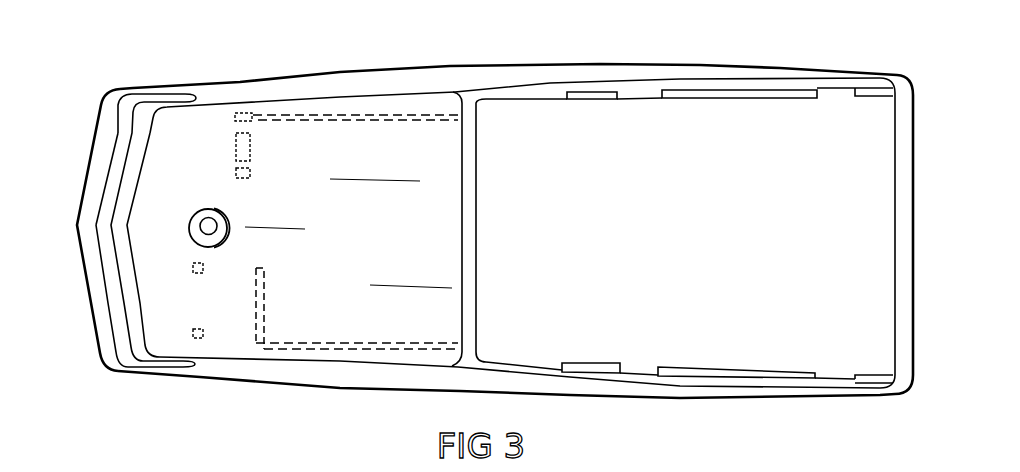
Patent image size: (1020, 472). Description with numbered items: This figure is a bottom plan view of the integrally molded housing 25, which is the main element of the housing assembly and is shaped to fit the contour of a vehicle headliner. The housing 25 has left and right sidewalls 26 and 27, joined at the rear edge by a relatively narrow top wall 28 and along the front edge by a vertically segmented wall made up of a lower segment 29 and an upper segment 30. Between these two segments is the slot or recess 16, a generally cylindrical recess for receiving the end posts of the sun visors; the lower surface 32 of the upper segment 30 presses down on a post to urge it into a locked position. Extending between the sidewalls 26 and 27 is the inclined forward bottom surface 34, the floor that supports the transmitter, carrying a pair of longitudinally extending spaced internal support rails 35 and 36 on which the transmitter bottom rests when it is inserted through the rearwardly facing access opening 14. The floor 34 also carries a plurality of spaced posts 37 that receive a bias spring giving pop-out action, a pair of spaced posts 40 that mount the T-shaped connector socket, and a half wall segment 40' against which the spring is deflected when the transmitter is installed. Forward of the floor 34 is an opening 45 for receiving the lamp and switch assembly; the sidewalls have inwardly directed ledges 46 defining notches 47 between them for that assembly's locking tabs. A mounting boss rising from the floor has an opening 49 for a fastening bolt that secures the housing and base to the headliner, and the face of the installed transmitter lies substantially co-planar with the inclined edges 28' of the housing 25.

The access opening 14 is at (490, 208).
The slot or recess 16 is at (172, 368).
The housing 25 is at (498, 62).
The left sidewall 26 is at (350, 389).
The right sidewall 27 is at (402, 82).
The top wall 28 is at (684, 233).
The inclined edges 28' is at (499, 229).
The lower segment 29 is at (149, 117).
The upper segment 30 is at (95, 168).
The lower surface 32 is at (118, 132).
The forward bottom surface 34 is at (370, 236).
The internal support rail 35 is at (360, 125).
The internal support rail 36 is at (344, 343).
The spaced posts 37 is at (258, 125).
The spaced posts 40 is at (213, 300).
The half wall segment 40' is at (293, 308).
The opening 45 is at (755, 150).
The ledges 46 is at (595, 99).
The notches 47 is at (645, 92).
The opening 49 is at (209, 225).